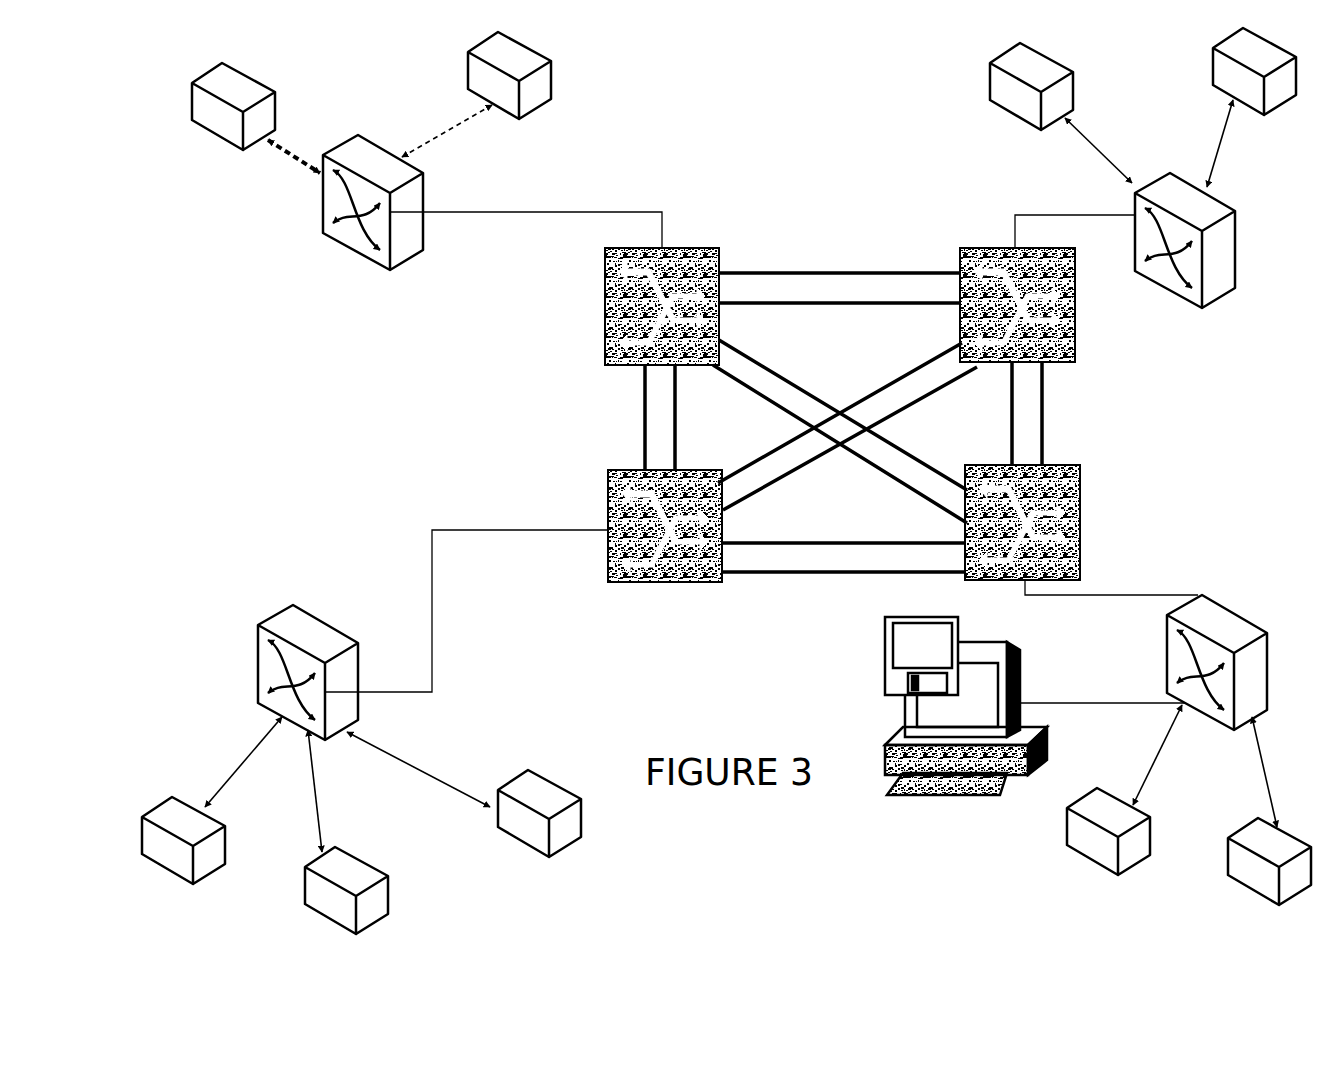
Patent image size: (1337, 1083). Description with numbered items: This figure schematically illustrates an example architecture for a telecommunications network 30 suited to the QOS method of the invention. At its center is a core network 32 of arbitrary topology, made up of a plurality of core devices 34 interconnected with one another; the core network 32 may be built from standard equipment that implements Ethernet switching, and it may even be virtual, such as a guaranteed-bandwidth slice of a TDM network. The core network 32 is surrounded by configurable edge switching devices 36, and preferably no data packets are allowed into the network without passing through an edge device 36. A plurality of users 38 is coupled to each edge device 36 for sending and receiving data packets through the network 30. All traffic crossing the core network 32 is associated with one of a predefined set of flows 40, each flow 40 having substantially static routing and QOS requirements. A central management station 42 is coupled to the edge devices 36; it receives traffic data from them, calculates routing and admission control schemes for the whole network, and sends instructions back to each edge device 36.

The network 30 is at (767, 125).
The core network 32 is at (813, 233).
The core devices 34 is at (605, 317).
The edge switching devices 36 is at (425, 220).
The users 38 is at (1213, 83).
The flows 40 is at (893, 377).
The central management station 42 is at (880, 692).